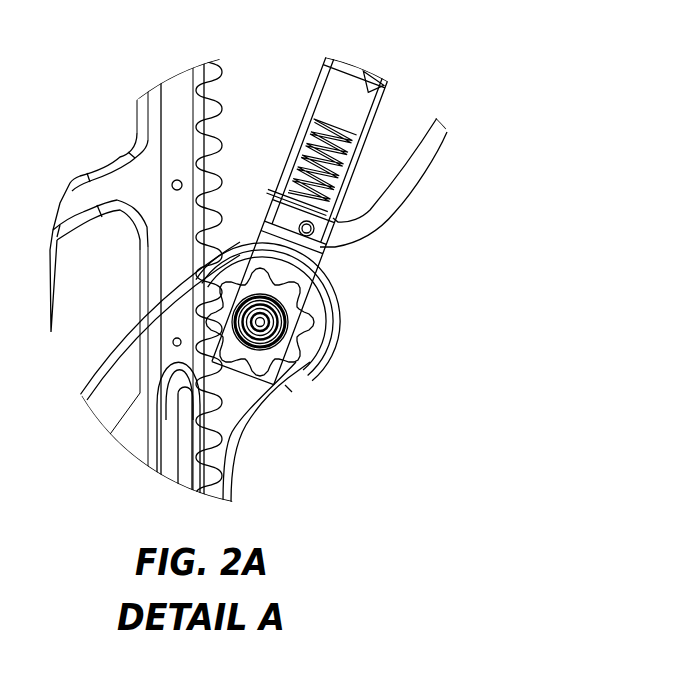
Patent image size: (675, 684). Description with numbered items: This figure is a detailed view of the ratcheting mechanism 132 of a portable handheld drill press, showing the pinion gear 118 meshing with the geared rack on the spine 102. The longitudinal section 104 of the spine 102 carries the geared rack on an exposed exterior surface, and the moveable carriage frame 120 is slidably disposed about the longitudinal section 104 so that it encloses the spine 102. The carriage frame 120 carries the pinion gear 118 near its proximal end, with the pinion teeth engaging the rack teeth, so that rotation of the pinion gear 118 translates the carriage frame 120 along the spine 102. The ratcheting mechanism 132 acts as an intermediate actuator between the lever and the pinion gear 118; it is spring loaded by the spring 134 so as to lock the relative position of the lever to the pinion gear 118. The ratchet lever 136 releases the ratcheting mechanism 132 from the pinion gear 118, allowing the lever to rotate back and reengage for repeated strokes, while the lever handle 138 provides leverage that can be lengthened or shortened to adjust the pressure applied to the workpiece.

The spine 102 is at (153, 78).
The longitudinal section 104 is at (121, 184).
The pinion gear 118 is at (300, 356).
The carriage frame 120 is at (235, 405).
The ratcheting mechanism 132 is at (368, 309).
The spring 134 is at (276, 187).
The ratchet lever 136 is at (417, 167).
The lever handle 138 is at (214, 110).